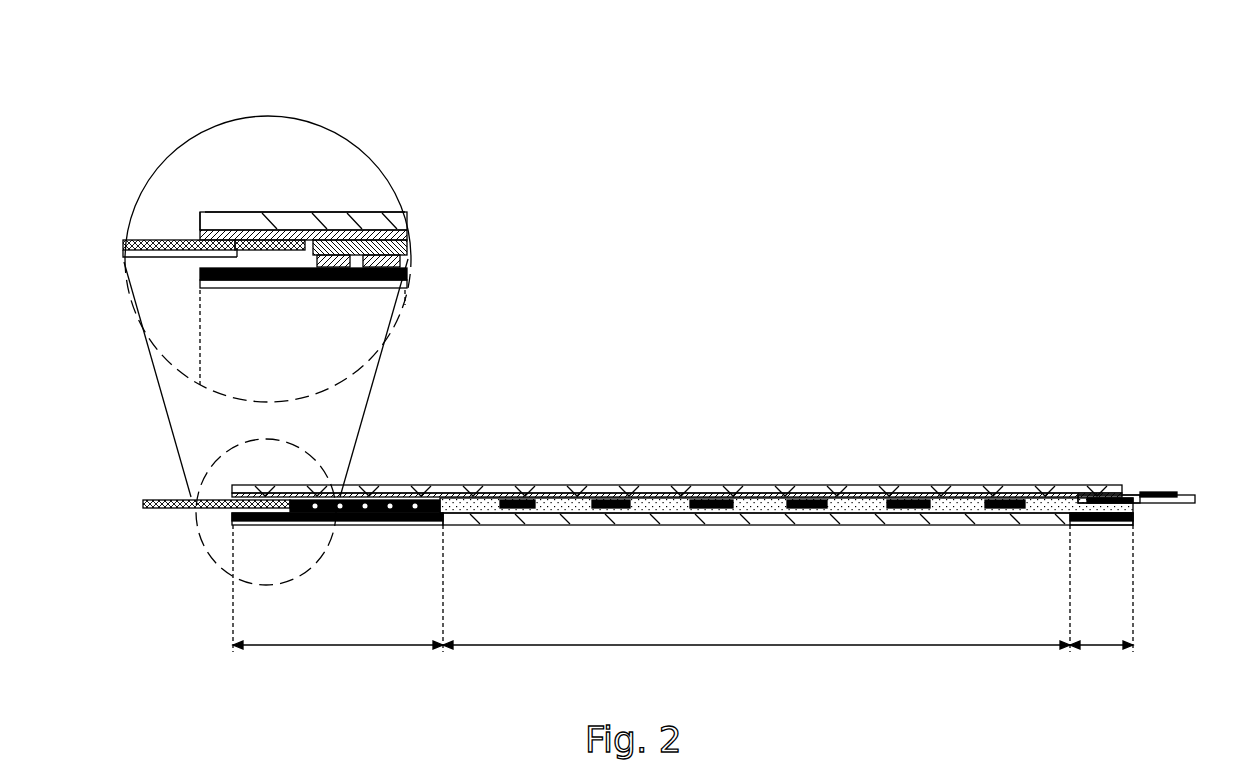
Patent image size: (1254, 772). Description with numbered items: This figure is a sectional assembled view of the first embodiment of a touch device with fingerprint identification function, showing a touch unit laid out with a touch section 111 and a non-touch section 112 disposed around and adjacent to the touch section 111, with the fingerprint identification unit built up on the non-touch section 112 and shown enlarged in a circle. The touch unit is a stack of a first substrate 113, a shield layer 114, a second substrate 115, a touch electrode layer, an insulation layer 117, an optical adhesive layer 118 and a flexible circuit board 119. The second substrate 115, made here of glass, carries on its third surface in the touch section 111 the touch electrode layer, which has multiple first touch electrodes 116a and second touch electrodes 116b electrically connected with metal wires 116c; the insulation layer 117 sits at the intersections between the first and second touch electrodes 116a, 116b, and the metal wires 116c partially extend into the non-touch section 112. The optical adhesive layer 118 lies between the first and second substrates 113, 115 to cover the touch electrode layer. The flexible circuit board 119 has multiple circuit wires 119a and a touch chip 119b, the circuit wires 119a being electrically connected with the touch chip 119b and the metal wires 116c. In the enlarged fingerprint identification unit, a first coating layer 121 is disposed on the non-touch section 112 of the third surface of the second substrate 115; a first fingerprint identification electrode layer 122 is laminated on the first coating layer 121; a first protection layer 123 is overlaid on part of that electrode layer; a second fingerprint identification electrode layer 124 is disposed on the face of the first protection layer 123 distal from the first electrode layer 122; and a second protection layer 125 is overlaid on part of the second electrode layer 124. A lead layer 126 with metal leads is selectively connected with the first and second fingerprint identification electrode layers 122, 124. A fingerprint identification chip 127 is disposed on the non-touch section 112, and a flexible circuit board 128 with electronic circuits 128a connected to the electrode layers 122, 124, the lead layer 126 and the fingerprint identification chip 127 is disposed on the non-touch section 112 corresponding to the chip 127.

The touch section 111 is at (560, 628).
The non-touch section 112 is at (368, 628).
The first substrate 113 is at (872, 512).
The shield layer 114 is at (280, 235).
The second substrate 115 is at (262, 212).
The first touch electrodes 116a is at (580, 499).
The second touch electrodes 116b is at (728, 499).
The metal wires 116c is at (1087, 502).
The insulation layer 117 is at (640, 495).
The optical adhesive layer 118 is at (800, 500).
The flexible circuit board 119 is at (1198, 500).
The circuit wires 119a is at (1142, 504).
The touch chip 119b is at (1170, 492).
The first coating layer 121 is at (226, 212).
The first fingerprint identification electrode layer 122 is at (407, 243).
The first protection layer 123 is at (407, 258).
The second fingerprint identification electrode layer 124 is at (407, 278).
The second protection layer 125 is at (404, 288).
The lead layer 126 is at (365, 241).
The fingerprint identification chip 127 is at (237, 257).
The flexible circuit board 128 is at (150, 240).
The electronic circuits 128a is at (200, 212).